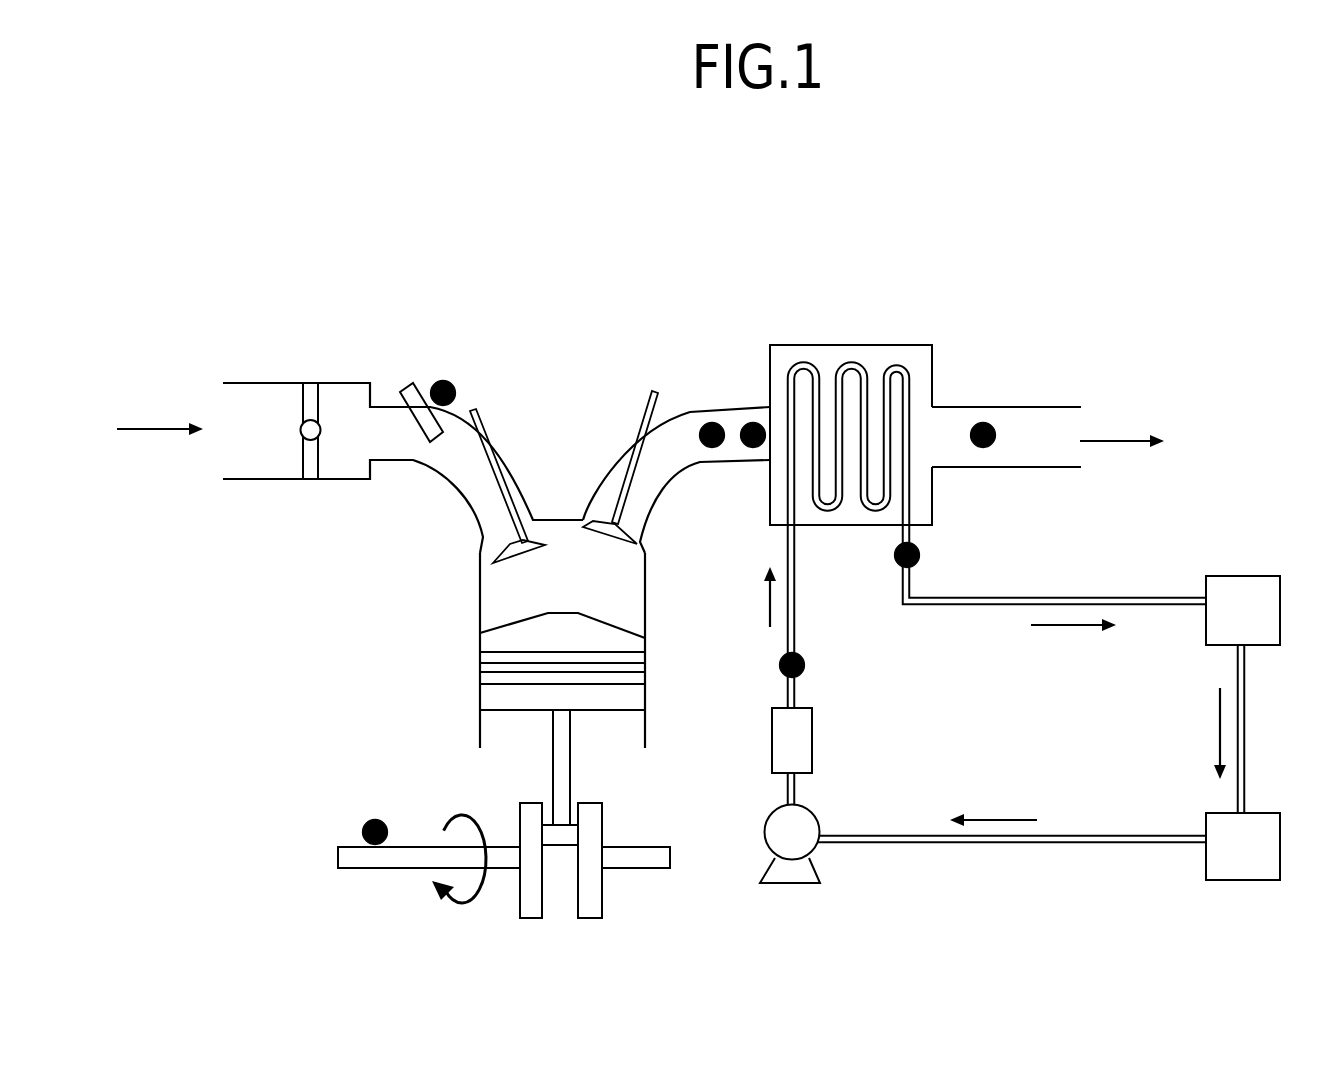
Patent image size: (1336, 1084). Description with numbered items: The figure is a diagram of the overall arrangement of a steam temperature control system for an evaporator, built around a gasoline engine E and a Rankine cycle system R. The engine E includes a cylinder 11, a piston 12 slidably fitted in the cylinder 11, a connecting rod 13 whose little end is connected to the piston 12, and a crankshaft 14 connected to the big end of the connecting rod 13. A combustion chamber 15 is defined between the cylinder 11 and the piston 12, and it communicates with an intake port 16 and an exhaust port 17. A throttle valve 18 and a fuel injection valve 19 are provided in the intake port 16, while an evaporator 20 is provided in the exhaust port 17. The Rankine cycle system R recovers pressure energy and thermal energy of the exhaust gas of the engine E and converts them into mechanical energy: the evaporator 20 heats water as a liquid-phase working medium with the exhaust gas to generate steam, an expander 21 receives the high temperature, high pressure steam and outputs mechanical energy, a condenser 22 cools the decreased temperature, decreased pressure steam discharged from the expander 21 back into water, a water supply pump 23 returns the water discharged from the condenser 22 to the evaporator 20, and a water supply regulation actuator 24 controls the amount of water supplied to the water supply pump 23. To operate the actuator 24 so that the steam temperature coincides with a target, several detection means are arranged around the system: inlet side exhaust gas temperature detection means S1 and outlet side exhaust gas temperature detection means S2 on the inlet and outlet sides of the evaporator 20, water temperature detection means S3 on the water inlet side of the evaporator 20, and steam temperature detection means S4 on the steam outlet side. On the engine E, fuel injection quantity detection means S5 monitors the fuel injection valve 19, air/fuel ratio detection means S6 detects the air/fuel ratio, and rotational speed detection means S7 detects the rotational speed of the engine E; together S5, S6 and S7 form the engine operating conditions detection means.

The cylinder 11 is at (643, 727).
The piston 12 is at (610, 645).
The connecting rod 13 is at (563, 768).
The crankshaft 14 is at (410, 858).
The combustion chamber 15 is at (544, 598).
The intake port 16 is at (467, 500).
The exhaust port 17 is at (672, 478).
The throttle valve 18 is at (305, 460).
The fuel injection valve 19 is at (427, 442).
The evaporator 20 is at (851, 330).
The expander 21 is at (1225, 628).
The condenser 22 is at (1225, 865).
The water supply pump 23 is at (773, 820).
The water supply regulation actuator 24 is at (805, 743).
The gasoline engine E is at (656, 603).
The Rankine cycle system R is at (1159, 528).
The inlet side exhaust gas temperature detection means S1 is at (712, 423).
The outlet side exhaust gas temperature detection means S2 is at (983, 423).
The water temperature detection means S3 is at (804, 665).
The steam temperature detection means S4 is at (919, 555).
The fuel injection quantity detection means S5 is at (443, 381).
The air/fuel ratio detection means S6 is at (753, 423).
The rotational speed detection means S7 is at (375, 820).